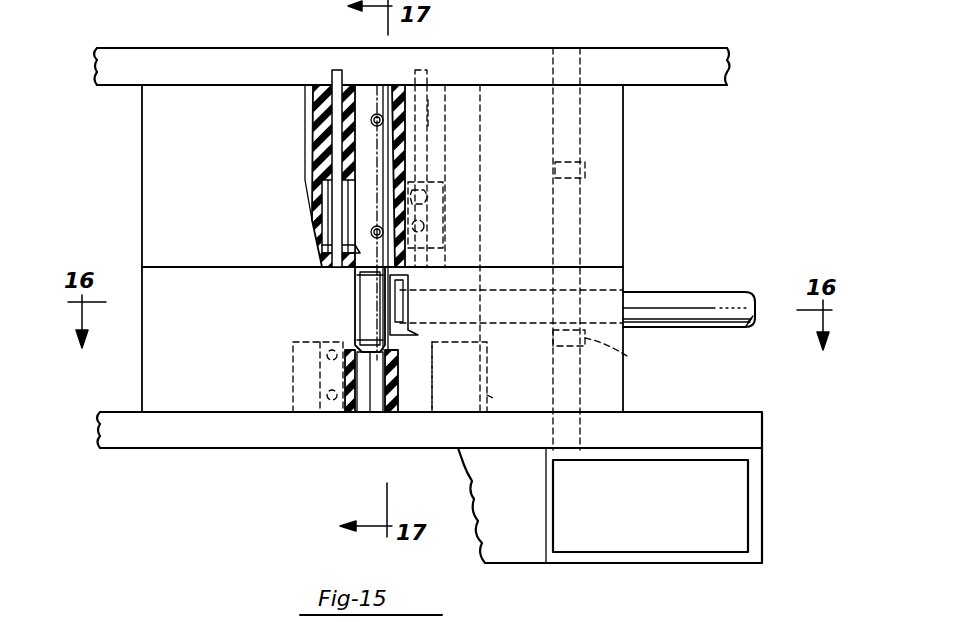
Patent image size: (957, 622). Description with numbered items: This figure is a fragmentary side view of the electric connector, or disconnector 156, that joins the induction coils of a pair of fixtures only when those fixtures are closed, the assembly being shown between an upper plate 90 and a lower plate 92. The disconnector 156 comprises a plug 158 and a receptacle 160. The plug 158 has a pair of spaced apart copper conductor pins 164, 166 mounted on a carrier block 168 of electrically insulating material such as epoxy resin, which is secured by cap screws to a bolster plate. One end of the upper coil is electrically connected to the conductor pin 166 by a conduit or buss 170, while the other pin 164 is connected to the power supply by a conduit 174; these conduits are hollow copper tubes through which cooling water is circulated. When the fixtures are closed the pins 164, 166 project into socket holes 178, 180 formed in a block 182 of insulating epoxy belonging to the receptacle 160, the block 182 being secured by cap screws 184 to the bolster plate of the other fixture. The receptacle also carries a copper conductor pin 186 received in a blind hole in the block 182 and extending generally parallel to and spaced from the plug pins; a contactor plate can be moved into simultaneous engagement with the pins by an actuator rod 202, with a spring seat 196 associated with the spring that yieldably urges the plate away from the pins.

The upper platen plate 90 is at (727, 75).
The lower platen plate 92 is at (762, 440).
The disconnector 156 is at (641, 252).
The plug 158 is at (640, 163).
The receptacle 160 is at (638, 400).
The conductor pin 164 is at (352, 146).
The conductor pin 166 is at (478, 175).
The carrier block 168 is at (160, 133).
The conduit or buss 170 is at (422, 110).
The conduit 174 is at (337, 115).
The socket hole 178 is at (360, 412).
The socket hole 180 is at (494, 405).
The block 182 is at (158, 372).
The cap screws 184 is at (630, 356).
The conductor pin 186 is at (361, 297).
The spring seat 196 is at (406, 327).
The actuator rod 202 is at (693, 300).